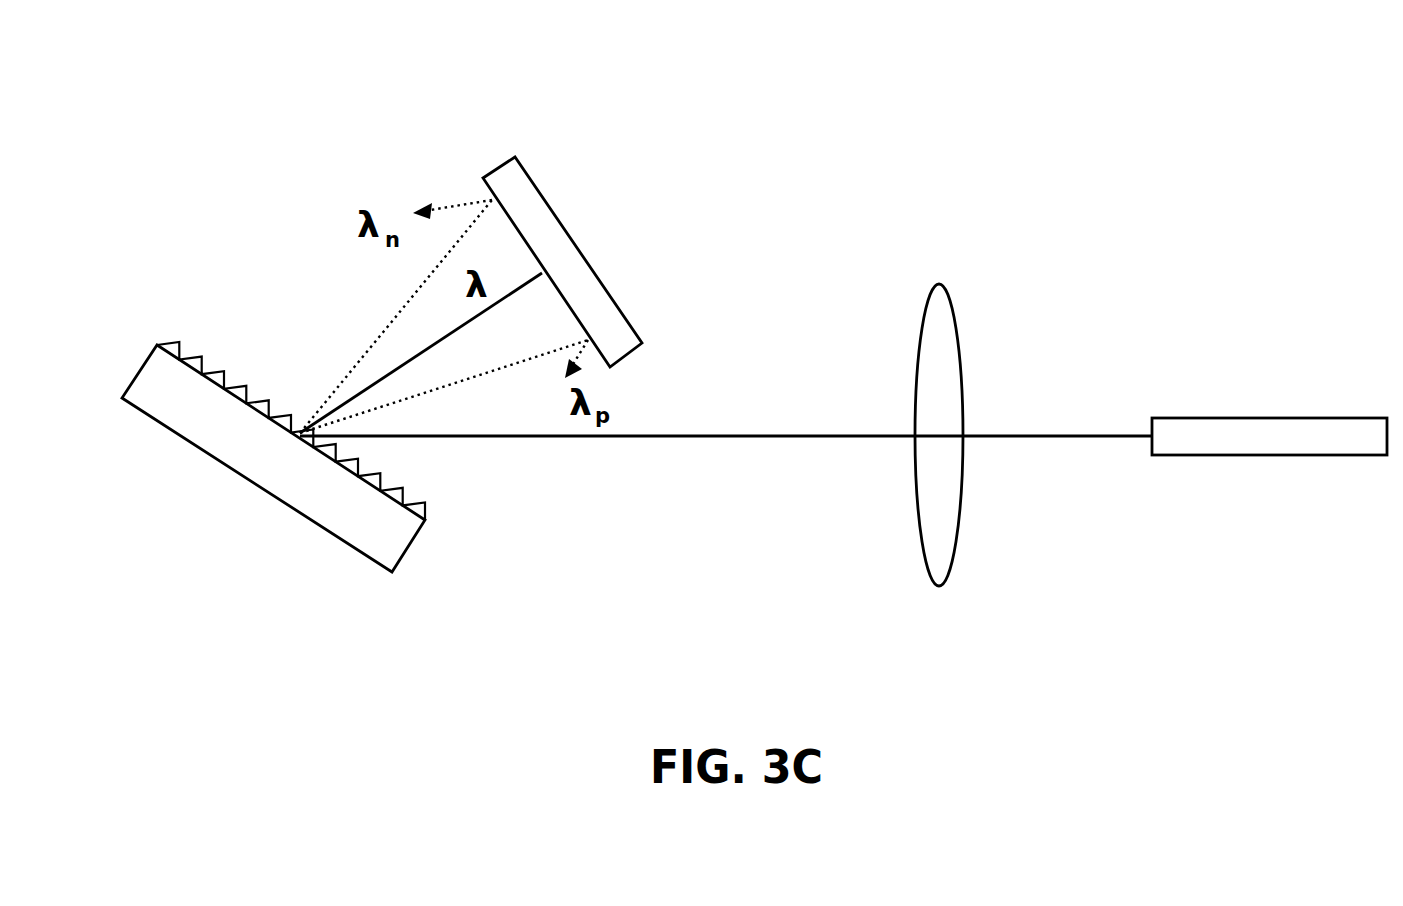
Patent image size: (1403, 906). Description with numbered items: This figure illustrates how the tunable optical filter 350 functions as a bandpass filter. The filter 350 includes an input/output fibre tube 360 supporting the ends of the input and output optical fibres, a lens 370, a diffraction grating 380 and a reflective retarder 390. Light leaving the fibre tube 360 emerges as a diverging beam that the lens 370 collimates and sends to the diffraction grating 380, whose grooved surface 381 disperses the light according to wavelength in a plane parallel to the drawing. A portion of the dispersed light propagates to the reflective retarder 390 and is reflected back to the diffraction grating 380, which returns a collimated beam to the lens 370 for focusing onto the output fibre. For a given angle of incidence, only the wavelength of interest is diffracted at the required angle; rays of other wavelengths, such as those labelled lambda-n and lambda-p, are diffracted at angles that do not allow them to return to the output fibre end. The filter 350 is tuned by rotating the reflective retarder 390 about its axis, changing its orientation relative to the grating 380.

The optical filter 350 is at (940, 196).
The input/output fibre tube 360 is at (1237, 418).
The lens 370 is at (940, 583).
The diffraction grating 380 is at (410, 543).
The grating teeth / grooves 381 is at (233, 370).
The reflective retarder 390 is at (546, 196).